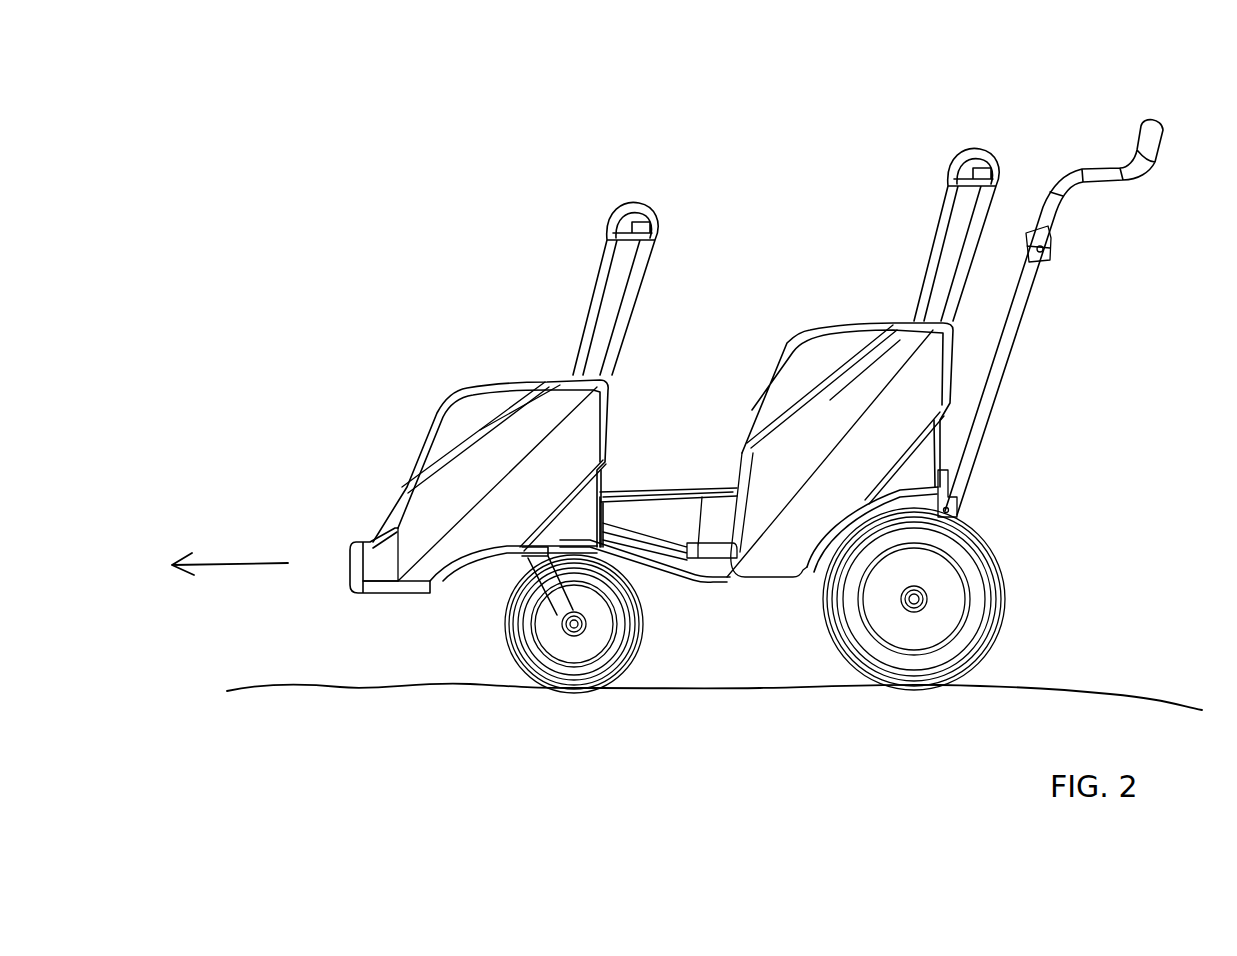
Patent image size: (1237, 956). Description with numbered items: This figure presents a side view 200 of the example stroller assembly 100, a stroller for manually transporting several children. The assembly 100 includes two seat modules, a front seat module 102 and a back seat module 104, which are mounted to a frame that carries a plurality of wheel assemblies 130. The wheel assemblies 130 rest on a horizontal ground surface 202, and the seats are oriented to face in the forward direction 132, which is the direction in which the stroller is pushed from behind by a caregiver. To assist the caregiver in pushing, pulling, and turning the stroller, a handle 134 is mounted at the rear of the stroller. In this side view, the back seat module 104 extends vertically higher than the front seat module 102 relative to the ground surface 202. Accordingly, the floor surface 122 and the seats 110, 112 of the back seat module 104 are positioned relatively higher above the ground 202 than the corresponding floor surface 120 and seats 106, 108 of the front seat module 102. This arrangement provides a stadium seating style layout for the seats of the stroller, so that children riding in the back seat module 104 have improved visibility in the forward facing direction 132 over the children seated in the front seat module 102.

The stroller assembly 100 is at (447, 255).
The front seat module 102 is at (628, 210).
The back seat module 104 is at (966, 148).
The seat 106 is at (429, 403).
The seat 108 is at (520, 407).
The seat 110 is at (754, 385).
The seat 112 is at (865, 370).
The floor surface 120 is at (371, 524).
The floor surface 122 is at (670, 473).
The wheel assemblies 130 is at (535, 677).
The forward direction 132 is at (247, 568).
The handle 134 is at (1163, 140).
The side view 200 is at (1099, 73).
The ground surface 202 is at (1127, 695).